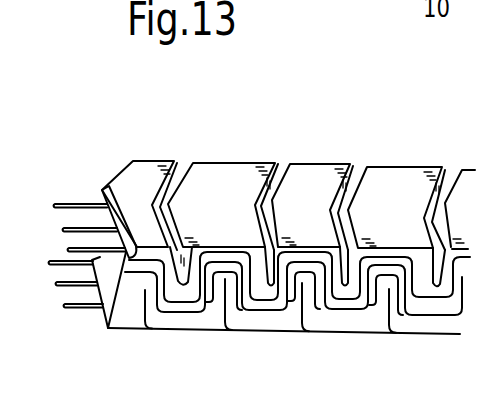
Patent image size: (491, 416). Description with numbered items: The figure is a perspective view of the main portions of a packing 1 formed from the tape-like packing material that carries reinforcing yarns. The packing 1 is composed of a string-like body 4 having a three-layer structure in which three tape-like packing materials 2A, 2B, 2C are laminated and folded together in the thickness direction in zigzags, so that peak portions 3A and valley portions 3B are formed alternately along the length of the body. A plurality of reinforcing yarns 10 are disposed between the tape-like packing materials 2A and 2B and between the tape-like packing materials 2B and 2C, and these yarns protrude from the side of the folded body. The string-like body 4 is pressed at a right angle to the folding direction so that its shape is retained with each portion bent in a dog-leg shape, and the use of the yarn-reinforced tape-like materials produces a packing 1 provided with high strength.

The packing 1 is at (186, 162).
The reinforcing yarns 10 is at (80, 205).
The tape-like packing material 2A is at (255, 288).
The tape-like packing material 2B is at (320, 308).
The tape-like packing material 2C is at (348, 330).
The peak portion 3A is at (325, 182).
The valley portion 3B is at (377, 334).
The string-like body 4 is at (400, 165).